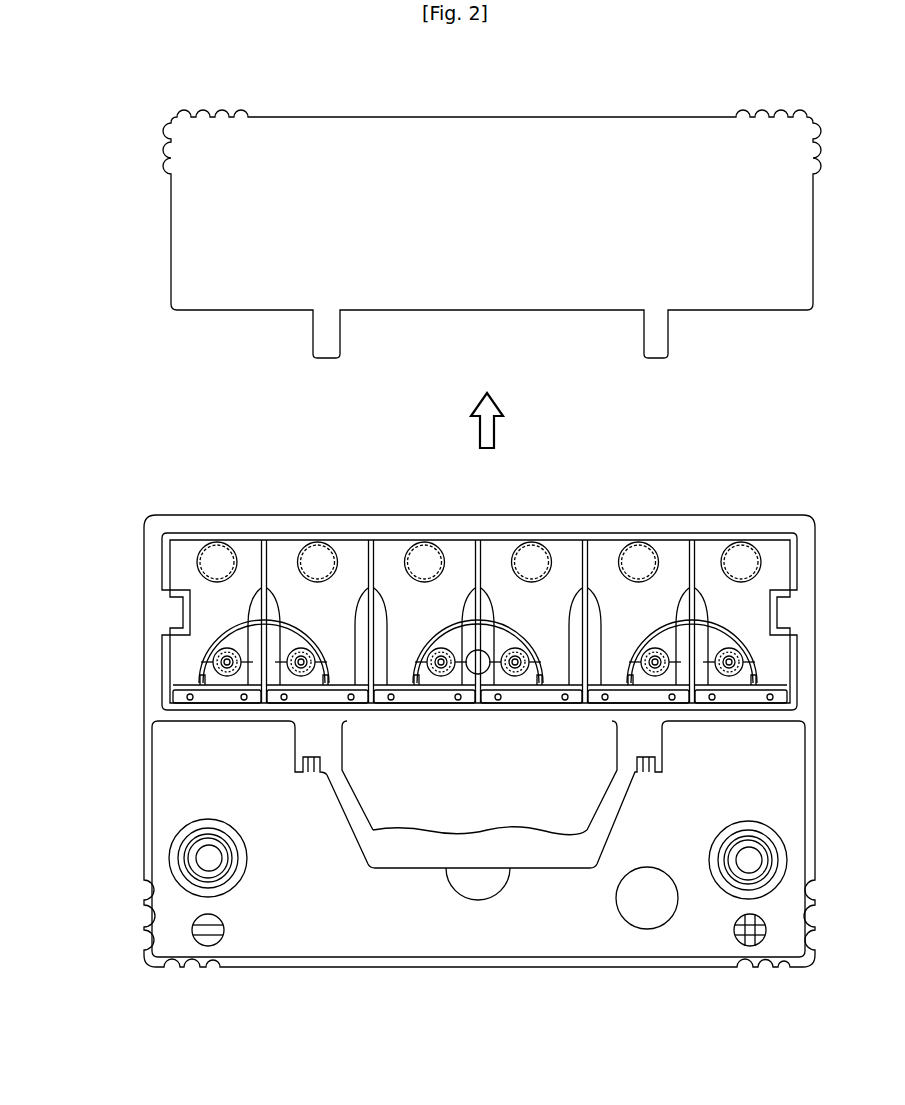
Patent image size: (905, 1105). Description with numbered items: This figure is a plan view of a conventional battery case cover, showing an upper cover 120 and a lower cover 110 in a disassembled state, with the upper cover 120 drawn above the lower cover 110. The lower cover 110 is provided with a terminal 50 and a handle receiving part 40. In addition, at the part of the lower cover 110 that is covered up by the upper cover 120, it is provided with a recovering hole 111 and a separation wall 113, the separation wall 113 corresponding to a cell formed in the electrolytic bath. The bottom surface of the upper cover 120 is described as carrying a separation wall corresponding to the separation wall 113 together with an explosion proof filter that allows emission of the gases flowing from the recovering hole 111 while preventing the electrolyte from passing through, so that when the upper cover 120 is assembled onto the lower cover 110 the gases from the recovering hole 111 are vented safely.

The upper cover 120 is at (490, 153).
The lower cover 110 is at (302, 915).
The separation wall 113 is at (704, 563).
The recovering hole 111 is at (734, 662).
The terminal 50 is at (205, 858).
The handle receiving part 40 is at (398, 853).